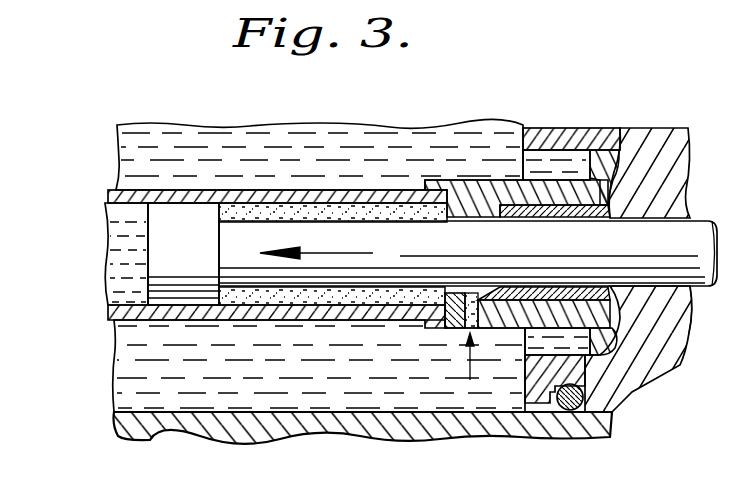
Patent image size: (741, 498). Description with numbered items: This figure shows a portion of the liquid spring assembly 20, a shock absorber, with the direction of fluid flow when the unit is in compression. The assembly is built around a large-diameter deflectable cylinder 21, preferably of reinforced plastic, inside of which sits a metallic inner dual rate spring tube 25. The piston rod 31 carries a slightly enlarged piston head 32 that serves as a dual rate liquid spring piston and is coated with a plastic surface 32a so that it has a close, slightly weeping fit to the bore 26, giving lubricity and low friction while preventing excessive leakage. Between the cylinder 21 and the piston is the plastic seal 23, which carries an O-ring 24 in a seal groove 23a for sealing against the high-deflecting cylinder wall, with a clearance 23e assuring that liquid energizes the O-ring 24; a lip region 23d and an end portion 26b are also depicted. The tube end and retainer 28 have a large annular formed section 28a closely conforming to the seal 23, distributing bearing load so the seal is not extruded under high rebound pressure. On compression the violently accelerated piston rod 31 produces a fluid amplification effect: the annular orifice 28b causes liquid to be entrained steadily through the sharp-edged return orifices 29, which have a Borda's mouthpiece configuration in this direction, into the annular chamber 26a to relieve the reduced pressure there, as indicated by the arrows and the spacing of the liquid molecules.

The liquid spring assembly 20 is at (545, 63).
The cylinder 21 is at (207, 429).
The seal assembly 23 is at (650, 128).
The seal groove 23a is at (548, 438).
The body lip 23d is at (623, 128).
The clearance 23e is at (530, 438).
The O-ring 24 is at (565, 440).
The inner dual rate spring tube 25 is at (268, 308).
The bore 26 is at (105, 300).
The annular chamber 26a is at (347, 212).
The sleeve end portion 26b is at (105, 228).
The retainer 28 is at (466, 180).
The annular formed section 28a is at (685, 318).
The annular orifice 28b is at (460, 290).
The return orifices 29 is at (470, 326).
The piston rod 31 is at (283, 232).
The piston head 32 is at (192, 203).
The plastic surface 32a is at (188, 268).